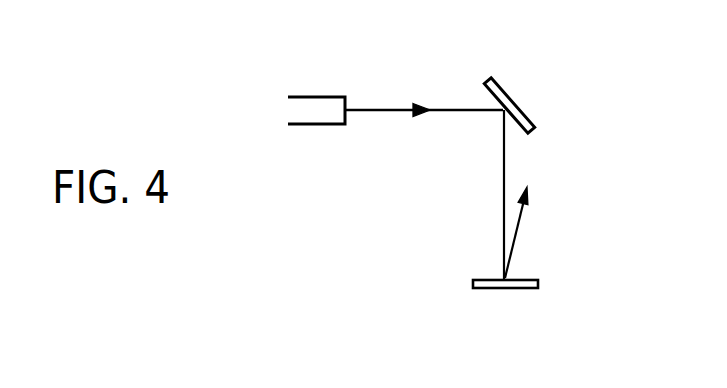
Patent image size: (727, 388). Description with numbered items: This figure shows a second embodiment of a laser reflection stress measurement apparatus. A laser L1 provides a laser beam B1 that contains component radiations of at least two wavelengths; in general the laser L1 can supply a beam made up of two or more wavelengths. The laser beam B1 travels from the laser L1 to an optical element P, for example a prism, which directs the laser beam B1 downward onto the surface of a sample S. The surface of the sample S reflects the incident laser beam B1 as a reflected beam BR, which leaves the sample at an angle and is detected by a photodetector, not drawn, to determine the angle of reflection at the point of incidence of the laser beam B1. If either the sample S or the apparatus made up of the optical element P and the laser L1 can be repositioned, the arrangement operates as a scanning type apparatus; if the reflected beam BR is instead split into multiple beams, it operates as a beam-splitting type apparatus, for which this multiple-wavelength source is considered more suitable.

The laser L1 is at (311, 125).
The laser beam B1 is at (383, 109).
The optical element P is at (497, 82).
The sample S is at (486, 278).
The reflected beam BR is at (518, 229).